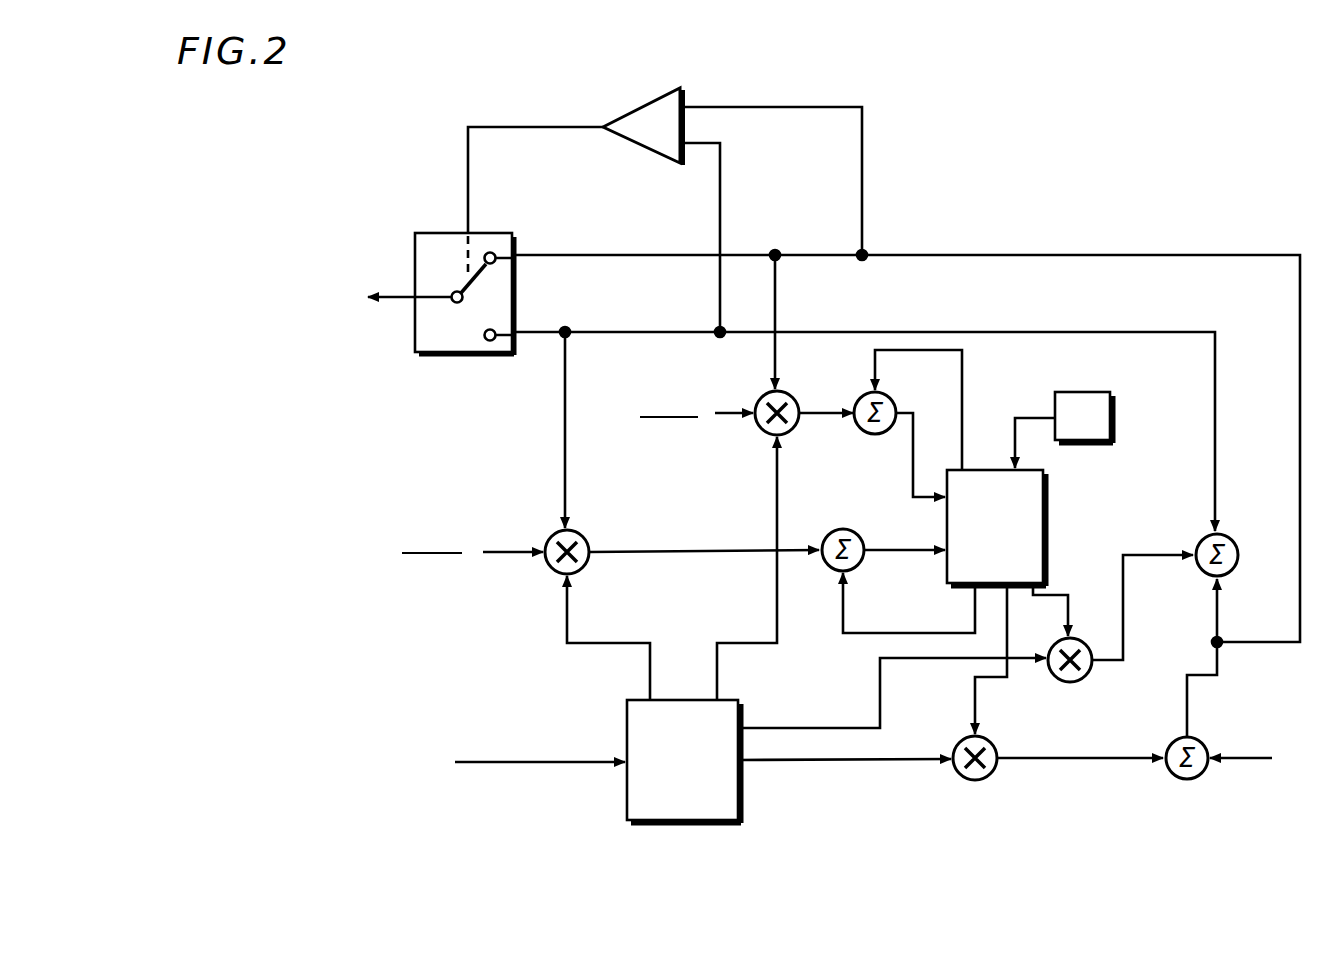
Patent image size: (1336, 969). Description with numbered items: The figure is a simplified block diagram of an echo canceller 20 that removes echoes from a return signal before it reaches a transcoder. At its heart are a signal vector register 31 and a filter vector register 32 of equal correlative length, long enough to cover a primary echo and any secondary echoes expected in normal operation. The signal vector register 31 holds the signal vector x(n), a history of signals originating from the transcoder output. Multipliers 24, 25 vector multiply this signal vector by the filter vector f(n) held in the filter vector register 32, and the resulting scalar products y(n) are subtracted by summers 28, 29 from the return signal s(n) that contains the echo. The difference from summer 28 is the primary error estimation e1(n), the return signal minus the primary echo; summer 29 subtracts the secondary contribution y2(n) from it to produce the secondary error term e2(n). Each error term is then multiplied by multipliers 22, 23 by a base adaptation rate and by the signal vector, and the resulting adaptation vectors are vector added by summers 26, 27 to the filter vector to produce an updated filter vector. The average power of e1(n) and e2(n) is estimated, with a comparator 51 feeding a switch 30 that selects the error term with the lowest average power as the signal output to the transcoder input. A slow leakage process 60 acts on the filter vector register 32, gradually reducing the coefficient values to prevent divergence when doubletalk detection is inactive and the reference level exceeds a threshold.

The echo canceller 20 is at (995, 70).
The multiplier 22 is at (557, 530).
The multiplier 23 is at (768, 392).
The multiplier 24 is at (967, 778).
The multiplier 25 is at (1060, 677).
The summer 26 is at (843, 530).
The summer 27 is at (861, 394).
The summer 28 is at (1190, 778).
The summer 29 is at (1225, 535).
The selector 30 is at (415, 233).
The signal vector register 31 is at (627, 707).
The filter vector register 32 is at (1047, 500).
The comparator / amplifier 51 is at (652, 101).
The slow leakage process 60 is at (1093, 392).